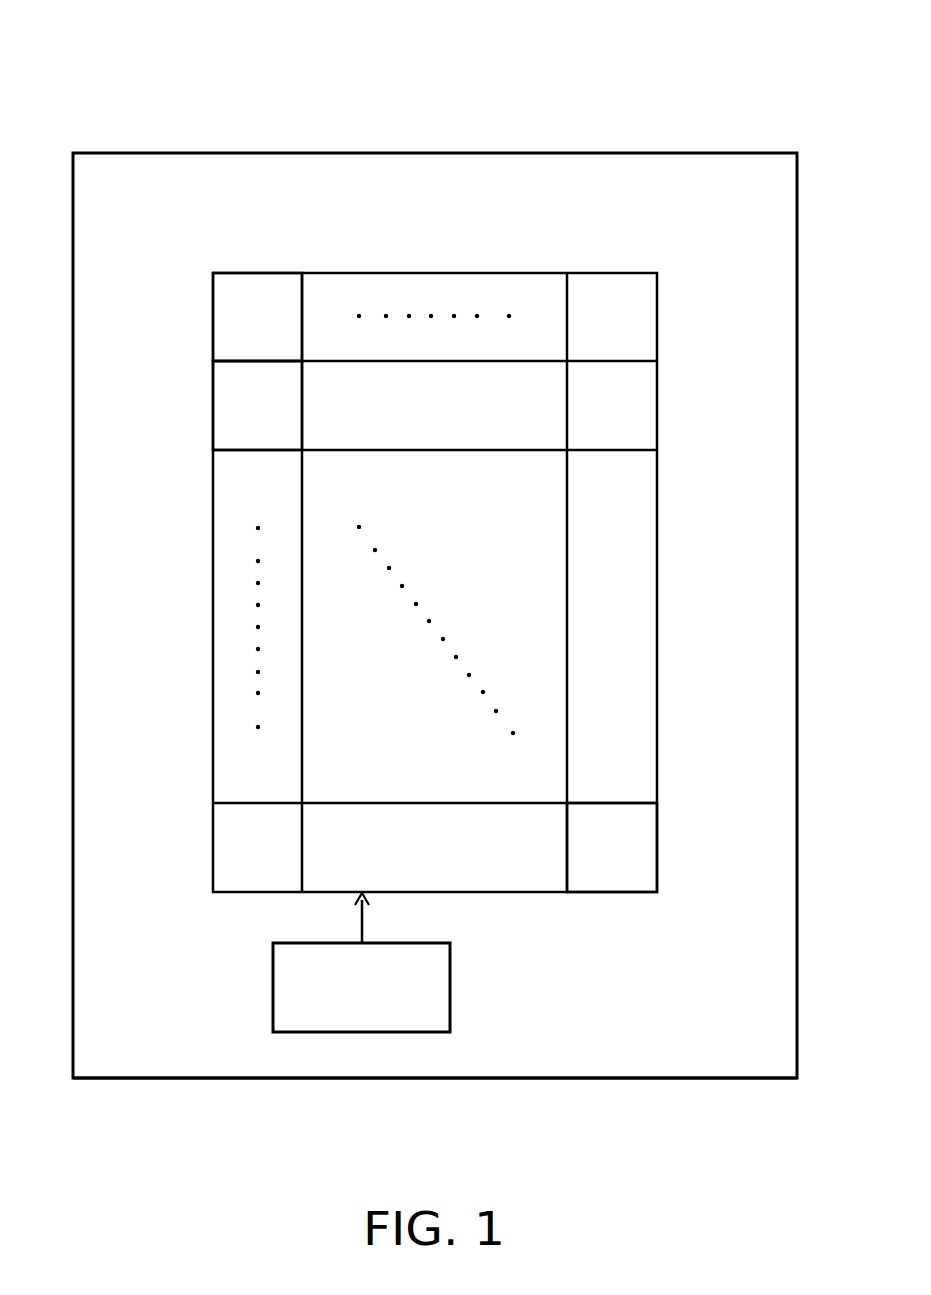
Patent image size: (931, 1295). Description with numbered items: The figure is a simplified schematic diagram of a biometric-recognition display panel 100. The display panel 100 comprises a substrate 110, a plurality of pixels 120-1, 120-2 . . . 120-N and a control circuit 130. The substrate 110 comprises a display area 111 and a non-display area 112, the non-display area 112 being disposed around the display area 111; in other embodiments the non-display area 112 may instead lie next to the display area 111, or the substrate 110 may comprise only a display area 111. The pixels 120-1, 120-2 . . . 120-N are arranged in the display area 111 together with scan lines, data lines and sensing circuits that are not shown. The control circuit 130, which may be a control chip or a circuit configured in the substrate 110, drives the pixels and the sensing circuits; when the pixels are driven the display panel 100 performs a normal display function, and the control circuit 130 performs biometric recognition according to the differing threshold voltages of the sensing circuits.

The biometric-recognition display panel 100 is at (459, 34).
The substrate 110 is at (610, 152).
The display area 111 is at (612, 272).
The non-display area 112 is at (613, 1057).
The pixel 120-1 is at (258, 297).
The pixel 120-2 is at (235, 407).
The pixel 120-N is at (633, 848).
The control circuit 130 is at (272, 989).